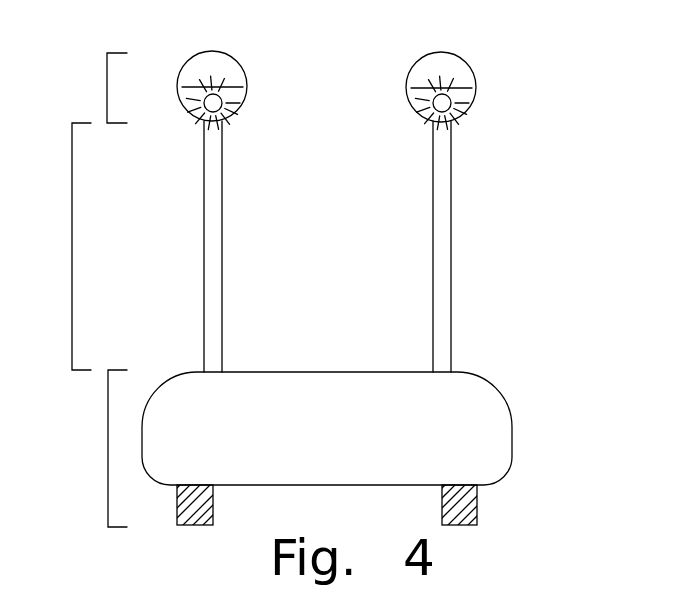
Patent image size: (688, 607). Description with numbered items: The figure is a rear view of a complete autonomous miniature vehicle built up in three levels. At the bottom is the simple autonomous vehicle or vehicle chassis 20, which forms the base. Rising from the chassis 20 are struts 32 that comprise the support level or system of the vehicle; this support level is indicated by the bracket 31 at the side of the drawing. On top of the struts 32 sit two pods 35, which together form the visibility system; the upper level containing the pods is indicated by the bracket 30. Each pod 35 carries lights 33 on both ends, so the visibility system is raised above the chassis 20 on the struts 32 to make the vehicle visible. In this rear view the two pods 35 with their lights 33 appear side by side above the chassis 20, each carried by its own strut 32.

The vehicle chassis 20 is at (108, 473).
The head section 30 is at (107, 85).
The stem section 31 is at (72, 263).
The struts 32 is at (222, 295).
The lights 33 is at (222, 96).
The pods 35 is at (188, 58).